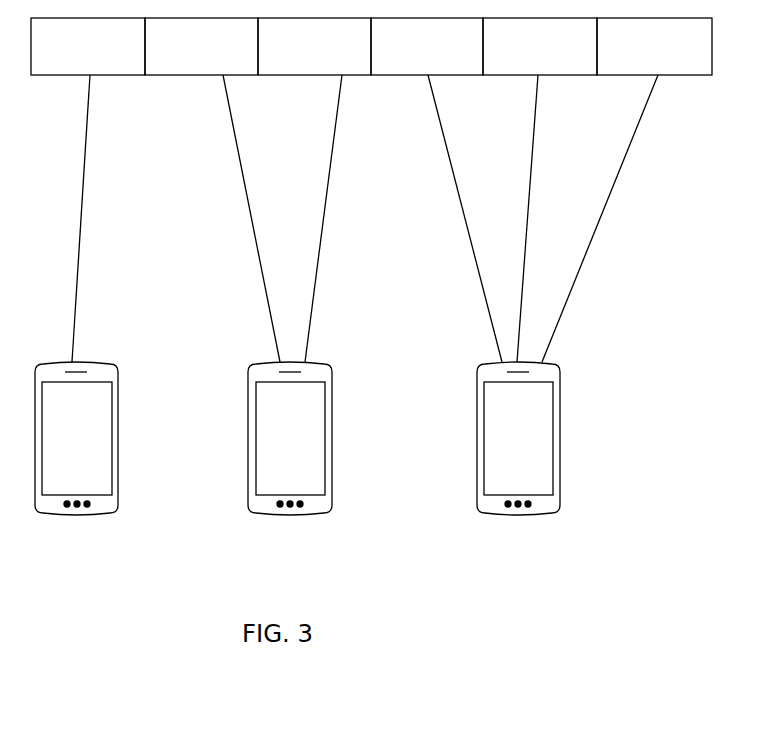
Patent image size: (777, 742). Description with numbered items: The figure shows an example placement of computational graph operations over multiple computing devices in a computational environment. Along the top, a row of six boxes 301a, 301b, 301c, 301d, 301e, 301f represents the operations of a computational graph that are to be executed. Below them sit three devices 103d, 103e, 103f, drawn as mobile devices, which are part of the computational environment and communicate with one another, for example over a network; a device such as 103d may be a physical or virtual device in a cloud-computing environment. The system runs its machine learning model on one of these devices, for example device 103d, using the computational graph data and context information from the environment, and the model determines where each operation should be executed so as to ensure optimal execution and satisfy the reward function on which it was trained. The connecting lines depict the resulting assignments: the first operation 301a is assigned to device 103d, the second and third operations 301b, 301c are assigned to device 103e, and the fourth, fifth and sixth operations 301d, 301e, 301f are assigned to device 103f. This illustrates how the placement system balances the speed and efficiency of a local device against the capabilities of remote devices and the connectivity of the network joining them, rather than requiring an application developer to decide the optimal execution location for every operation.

The access point / base station 301a is at (88, 46).
The access point / base station 301b is at (201, 46).
The access point / base station 301c is at (314, 46).
The access point / base station 301d is at (427, 46).
The access point / base station 301e is at (540, 46).
The access point / base station 301f is at (654, 46).
The device 103d is at (76, 452).
The device 103e is at (290, 452).
The device 103f is at (518, 452).